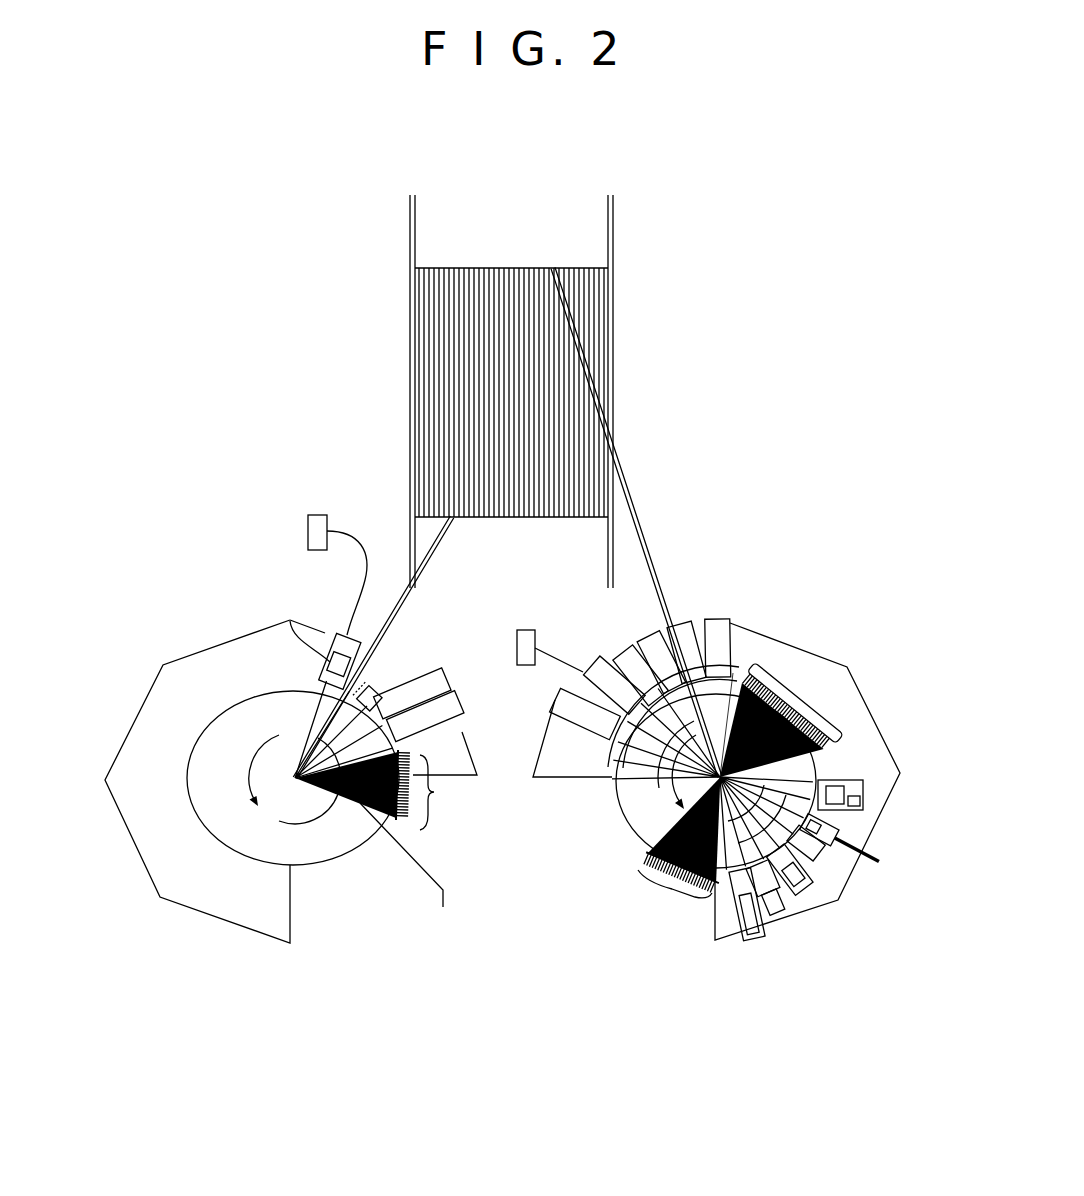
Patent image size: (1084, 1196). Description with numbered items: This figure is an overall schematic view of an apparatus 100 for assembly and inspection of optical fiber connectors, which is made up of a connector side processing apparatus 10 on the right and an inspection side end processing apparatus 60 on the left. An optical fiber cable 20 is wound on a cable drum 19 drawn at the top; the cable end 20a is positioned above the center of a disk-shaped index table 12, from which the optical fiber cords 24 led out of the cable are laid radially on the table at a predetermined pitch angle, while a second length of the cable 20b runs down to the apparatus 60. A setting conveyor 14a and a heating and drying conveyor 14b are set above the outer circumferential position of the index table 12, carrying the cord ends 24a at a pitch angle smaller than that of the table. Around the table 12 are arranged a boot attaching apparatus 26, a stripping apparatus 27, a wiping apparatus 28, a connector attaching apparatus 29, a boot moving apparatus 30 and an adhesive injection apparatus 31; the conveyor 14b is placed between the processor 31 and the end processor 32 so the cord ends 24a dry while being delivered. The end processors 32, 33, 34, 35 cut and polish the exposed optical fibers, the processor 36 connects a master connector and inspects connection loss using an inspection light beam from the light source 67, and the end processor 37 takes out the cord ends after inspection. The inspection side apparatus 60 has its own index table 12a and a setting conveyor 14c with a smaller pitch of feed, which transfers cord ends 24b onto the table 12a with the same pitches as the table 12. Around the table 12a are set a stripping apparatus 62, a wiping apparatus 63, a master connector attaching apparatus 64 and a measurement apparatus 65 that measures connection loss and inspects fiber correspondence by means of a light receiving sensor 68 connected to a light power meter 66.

The cable drum 19 is at (630, 302).
The optical fiber cable 20 is at (652, 558).
The end of the optical fiber cable 20a is at (735, 673).
The wire portion to second device 20b is at (400, 607).
The connector side processing apparatus 10 is at (803, 627).
The inspection side end processing apparatus 60 is at (362, 862).
The apparatus for assembly and inspection of optical fiber connectors 100 is at (578, 1018).
The index table 12 is at (618, 793).
The index table 12a is at (275, 862).
The setting conveyor 14a is at (650, 862).
The heating and drying conveyor 14b is at (838, 752).
The setting conveyor 14c is at (398, 820).
The optical fiber cord 24 is at (763, 690).
The cord end 24a is at (832, 697).
The cord end 24b is at (453, 792).
The boot attaching apparatus 26 is at (748, 940).
The stripping apparatus 27 is at (778, 908).
The wiping apparatus 28 is at (800, 888).
The connector attaching apparatus 29 is at (820, 863).
The boot moving apparatus 30 is at (848, 860).
The adhesive injection apparatus 31 is at (862, 812).
The end processor 32 is at (713, 632).
The end processor 33 is at (685, 624).
The end processor 34 is at (648, 642).
The end processor 35 is at (618, 660).
The processor for connecting the master connector and inspecting connection loss 36 is at (582, 672).
The end processor 37 is at (548, 692).
The stripping apparatus 62 is at (456, 712).
The wiping apparatus 63 is at (445, 683).
The master connector attaching apparatus 64 is at (382, 688).
The measurement apparatus 65 is at (345, 634).
The light power meter 66 is at (318, 514).
The light source 67 is at (522, 630).
The light receiving sensor 68 is at (290, 621).